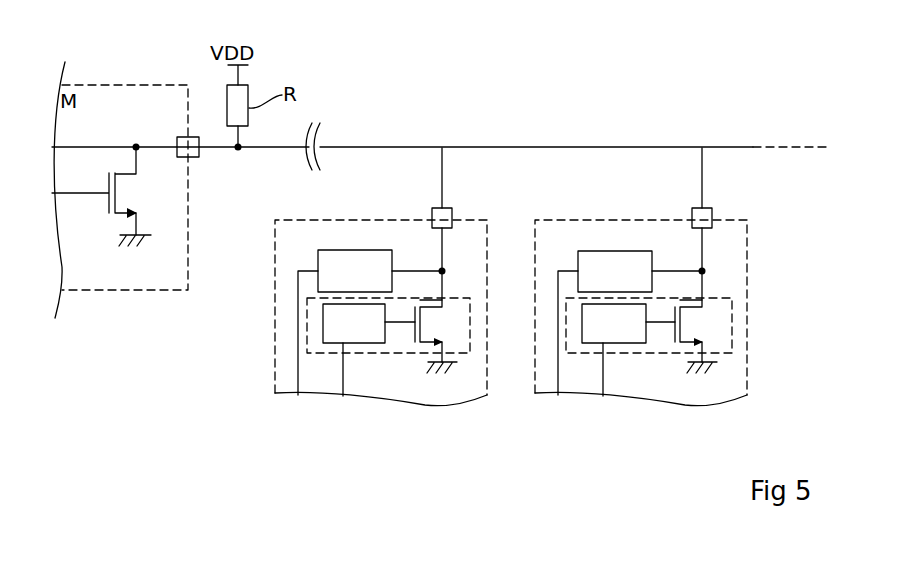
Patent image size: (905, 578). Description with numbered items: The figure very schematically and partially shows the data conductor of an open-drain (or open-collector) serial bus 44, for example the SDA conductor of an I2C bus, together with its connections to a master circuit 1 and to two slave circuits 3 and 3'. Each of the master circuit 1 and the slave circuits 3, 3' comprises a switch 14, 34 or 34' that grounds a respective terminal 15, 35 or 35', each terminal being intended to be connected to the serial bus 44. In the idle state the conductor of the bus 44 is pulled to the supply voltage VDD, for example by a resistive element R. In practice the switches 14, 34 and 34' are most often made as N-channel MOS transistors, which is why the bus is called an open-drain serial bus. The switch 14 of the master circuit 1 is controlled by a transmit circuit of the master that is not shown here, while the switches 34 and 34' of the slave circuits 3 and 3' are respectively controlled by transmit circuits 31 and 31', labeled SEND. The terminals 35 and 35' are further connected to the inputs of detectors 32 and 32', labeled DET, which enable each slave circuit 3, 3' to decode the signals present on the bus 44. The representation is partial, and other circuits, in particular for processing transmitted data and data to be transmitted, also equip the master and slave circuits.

The master circuit 1 is at (93, 291).
The slave circuit 3 is at (355, 313).
The slave circuit 3' is at (668, 313).
The switch 14 is at (136, 189).
The terminal 15 is at (177, 140).
The transmit circuit 31 is at (388, 349).
The transmit circuit 31' is at (649, 349).
The detector 32 is at (366, 256).
The detector 32' is at (629, 256).
The switch 34 is at (465, 336).
The switch 34' is at (729, 336).
The terminal 35 is at (461, 188).
The terminal 35' is at (725, 188).
The serial bus 44 is at (372, 147).